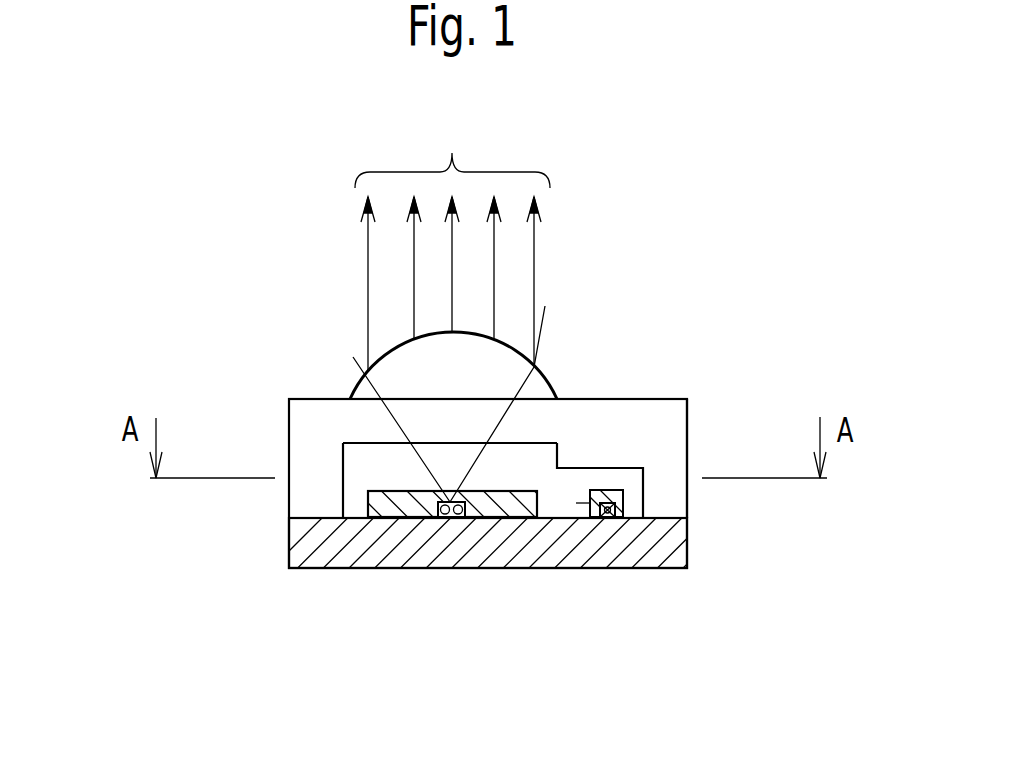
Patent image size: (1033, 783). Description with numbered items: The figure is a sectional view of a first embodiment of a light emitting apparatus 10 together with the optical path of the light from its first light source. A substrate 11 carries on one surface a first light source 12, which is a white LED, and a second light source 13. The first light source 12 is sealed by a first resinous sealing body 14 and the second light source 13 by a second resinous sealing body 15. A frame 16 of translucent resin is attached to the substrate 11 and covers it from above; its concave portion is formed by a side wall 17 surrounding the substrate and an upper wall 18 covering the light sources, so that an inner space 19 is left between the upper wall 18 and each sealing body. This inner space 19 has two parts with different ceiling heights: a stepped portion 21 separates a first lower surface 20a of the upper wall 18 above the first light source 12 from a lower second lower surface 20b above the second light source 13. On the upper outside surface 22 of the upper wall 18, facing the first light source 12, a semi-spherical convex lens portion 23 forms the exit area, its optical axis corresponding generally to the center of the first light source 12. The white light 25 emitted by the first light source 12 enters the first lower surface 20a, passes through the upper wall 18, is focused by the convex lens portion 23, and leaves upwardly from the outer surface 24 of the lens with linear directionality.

The light emitting apparatus 10 is at (746, 216).
The substrate 11 is at (533, 556).
The first light source 12 is at (435, 586).
The second light source 13 is at (634, 568).
The first resinous sealing body 14 is at (415, 560).
The second resinous sealing body 15 is at (551, 571).
The frame 16 is at (398, 442).
The side wall 17 is at (740, 450).
The upper wall 18 is at (622, 355).
The inner space 19 is at (278, 497).
The first lower surface 20a is at (435, 382).
The second lower surface 20b is at (667, 501).
The stepped portion 21 is at (605, 434).
The upper outside surface 22 is at (497, 335).
The convex lens portion 23 is at (425, 308).
The outer surface 24 is at (483, 373).
The white light 25 is at (452, 241).